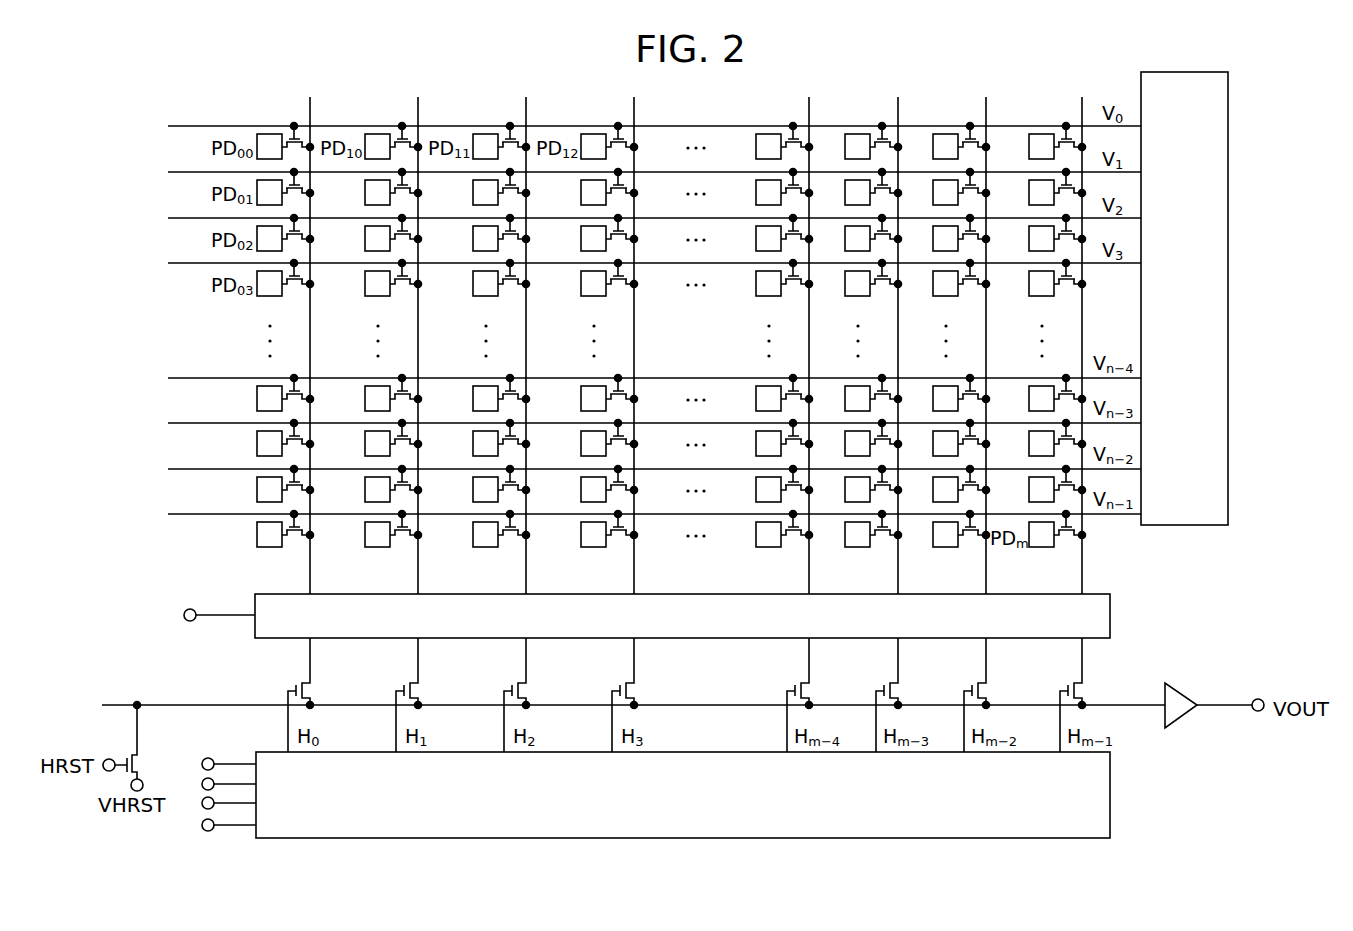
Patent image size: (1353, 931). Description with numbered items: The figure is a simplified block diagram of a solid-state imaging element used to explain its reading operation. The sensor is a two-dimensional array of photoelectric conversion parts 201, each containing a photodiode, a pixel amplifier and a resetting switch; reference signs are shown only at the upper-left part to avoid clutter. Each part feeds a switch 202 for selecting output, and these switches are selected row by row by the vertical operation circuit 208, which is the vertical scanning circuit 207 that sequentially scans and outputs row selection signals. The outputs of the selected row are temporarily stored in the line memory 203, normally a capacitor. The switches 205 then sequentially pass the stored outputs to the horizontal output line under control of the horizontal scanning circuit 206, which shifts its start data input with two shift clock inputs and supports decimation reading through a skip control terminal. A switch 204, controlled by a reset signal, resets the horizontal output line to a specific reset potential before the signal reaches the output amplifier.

The photoelectric conversion part 201 is at (274, 139).
The switch for selecting output 202 is at (309, 133).
The line memory 203 is at (261, 587).
The switch for resetting the horizontal output line 204 is at (129, 751).
The switch for sequentially outputting 205 is at (287, 681).
The horizontal scanning circuit 206 is at (261, 845).
The vertical scanning circuit 207 is at (1189, 688).
The vertical operation circuit 208 is at (1191, 69).